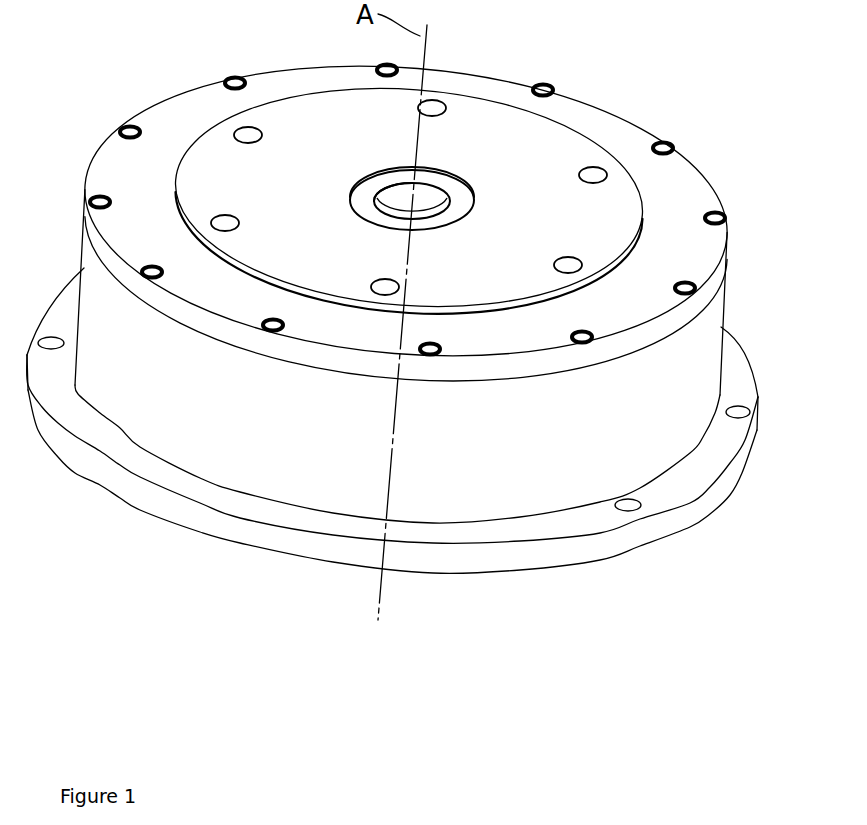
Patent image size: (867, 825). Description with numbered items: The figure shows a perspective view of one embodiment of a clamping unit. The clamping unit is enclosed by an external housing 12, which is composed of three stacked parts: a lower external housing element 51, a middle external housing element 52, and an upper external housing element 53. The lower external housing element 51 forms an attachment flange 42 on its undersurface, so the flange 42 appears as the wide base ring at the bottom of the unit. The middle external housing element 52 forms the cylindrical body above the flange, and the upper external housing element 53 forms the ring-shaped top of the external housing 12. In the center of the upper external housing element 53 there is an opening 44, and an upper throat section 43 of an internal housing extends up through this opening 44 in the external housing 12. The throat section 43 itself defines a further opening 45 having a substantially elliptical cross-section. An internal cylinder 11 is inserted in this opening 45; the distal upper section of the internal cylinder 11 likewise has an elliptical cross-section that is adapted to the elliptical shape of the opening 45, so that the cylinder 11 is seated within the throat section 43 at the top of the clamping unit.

The internal cylinder 11 is at (423, 203).
The external housing 12 is at (528, 465).
The attachment flange 42 is at (577, 548).
The upper throat section 43 is at (456, 207).
The opening 44 is at (446, 182).
The opening 45 is at (395, 188).
The lower external housing element 51 is at (252, 547).
The middle external housing element 52 is at (328, 451).
The upper external housing element 53 is at (672, 186).